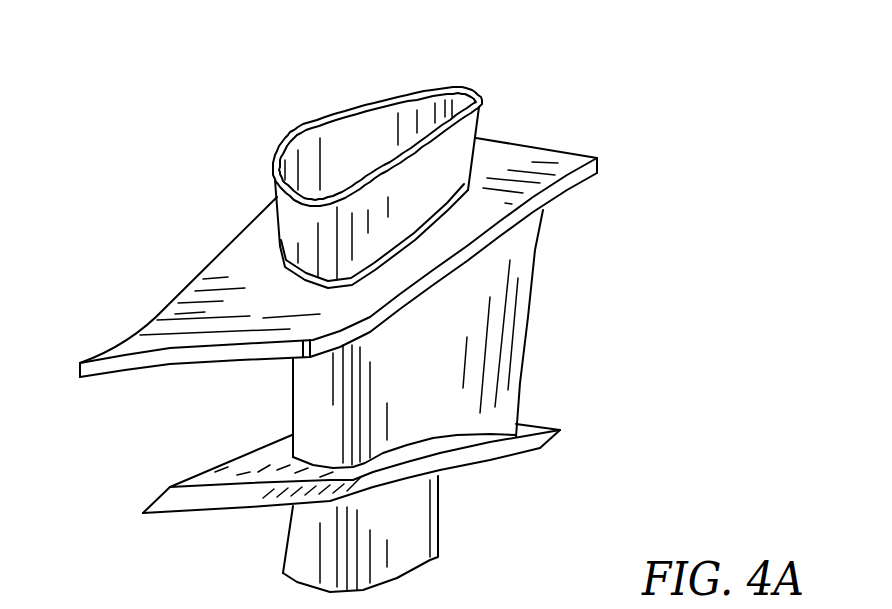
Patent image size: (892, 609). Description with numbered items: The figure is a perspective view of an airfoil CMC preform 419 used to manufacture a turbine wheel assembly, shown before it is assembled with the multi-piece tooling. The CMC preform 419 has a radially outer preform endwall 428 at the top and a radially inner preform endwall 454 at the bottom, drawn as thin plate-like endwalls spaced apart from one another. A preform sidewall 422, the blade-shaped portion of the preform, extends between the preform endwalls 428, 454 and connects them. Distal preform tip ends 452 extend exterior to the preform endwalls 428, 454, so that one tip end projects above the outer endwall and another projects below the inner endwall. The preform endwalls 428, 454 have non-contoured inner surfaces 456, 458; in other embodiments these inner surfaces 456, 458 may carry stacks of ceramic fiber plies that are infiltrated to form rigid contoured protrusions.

The CMC preform 419 is at (527, 88).
The preform sidewall 422 is at (547, 287).
The radially outer preform endwall 428 is at (360, 263).
The distal preform tip end 452 is at (437, 82).
The radially inner preform endwall 454 is at (386, 432).
The inner surface 456 is at (220, 471).
The inner surface 458 is at (103, 378).